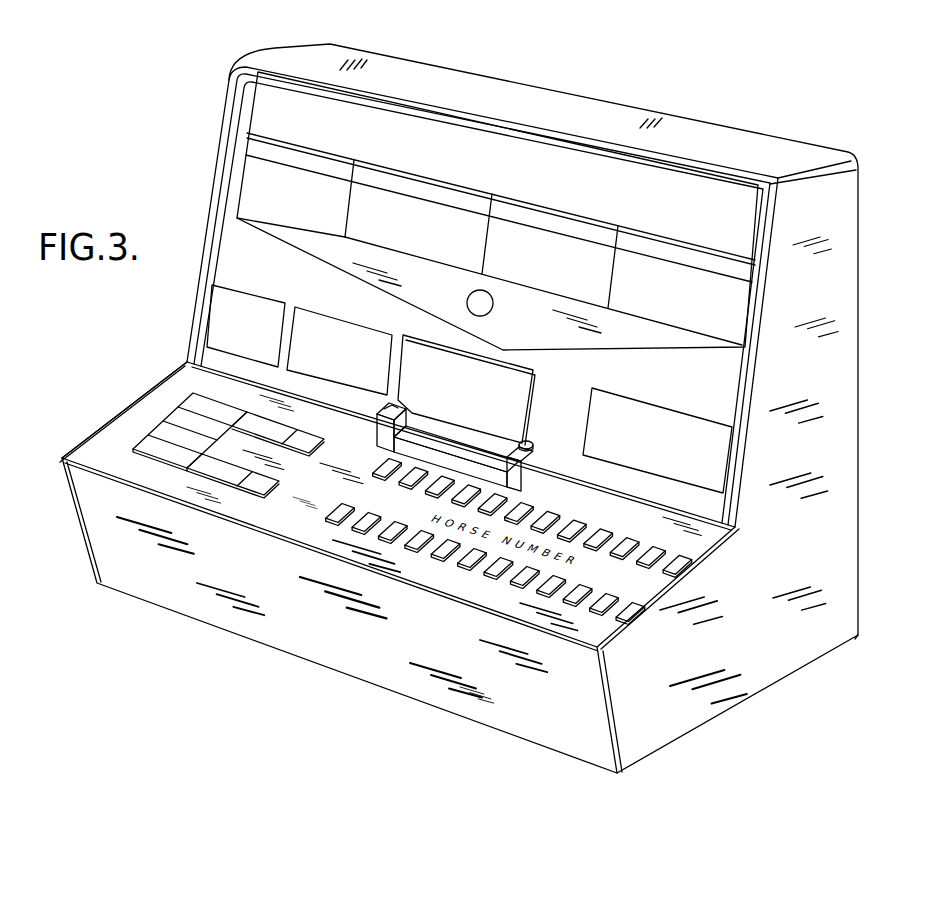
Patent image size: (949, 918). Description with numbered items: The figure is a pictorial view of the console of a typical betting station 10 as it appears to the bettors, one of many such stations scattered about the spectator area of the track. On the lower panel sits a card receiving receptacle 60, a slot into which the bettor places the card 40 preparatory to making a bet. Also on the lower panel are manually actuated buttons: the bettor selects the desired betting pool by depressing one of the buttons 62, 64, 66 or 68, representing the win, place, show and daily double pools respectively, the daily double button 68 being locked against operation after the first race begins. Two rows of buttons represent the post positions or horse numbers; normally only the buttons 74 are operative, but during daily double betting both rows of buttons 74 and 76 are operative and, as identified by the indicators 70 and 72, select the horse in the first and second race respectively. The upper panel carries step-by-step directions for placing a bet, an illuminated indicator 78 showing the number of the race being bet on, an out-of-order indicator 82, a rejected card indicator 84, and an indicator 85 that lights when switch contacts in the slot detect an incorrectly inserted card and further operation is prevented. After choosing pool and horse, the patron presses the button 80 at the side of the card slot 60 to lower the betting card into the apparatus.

The betting station 10 is at (858, 392).
The card 40 is at (517, 384).
The card receiving receptacle 60 is at (483, 455).
The win pool button 62 is at (222, 406).
The place pool button 64 is at (174, 413).
The show pool button 66 is at (160, 428).
The daily double pool button 68 is at (153, 455).
The first race indicator 70 is at (308, 437).
The second race indicator 72 is at (260, 491).
The horse number buttons 74 is at (648, 549).
The second row of horse number buttons 76 is at (496, 575).
The illuminated indicator 78 is at (466, 300).
The button 80 is at (534, 444).
The out-of-order indicator 82 is at (248, 300).
The rejected card indicator 84 is at (665, 414).
The improper insertion indicator 85 is at (333, 322).